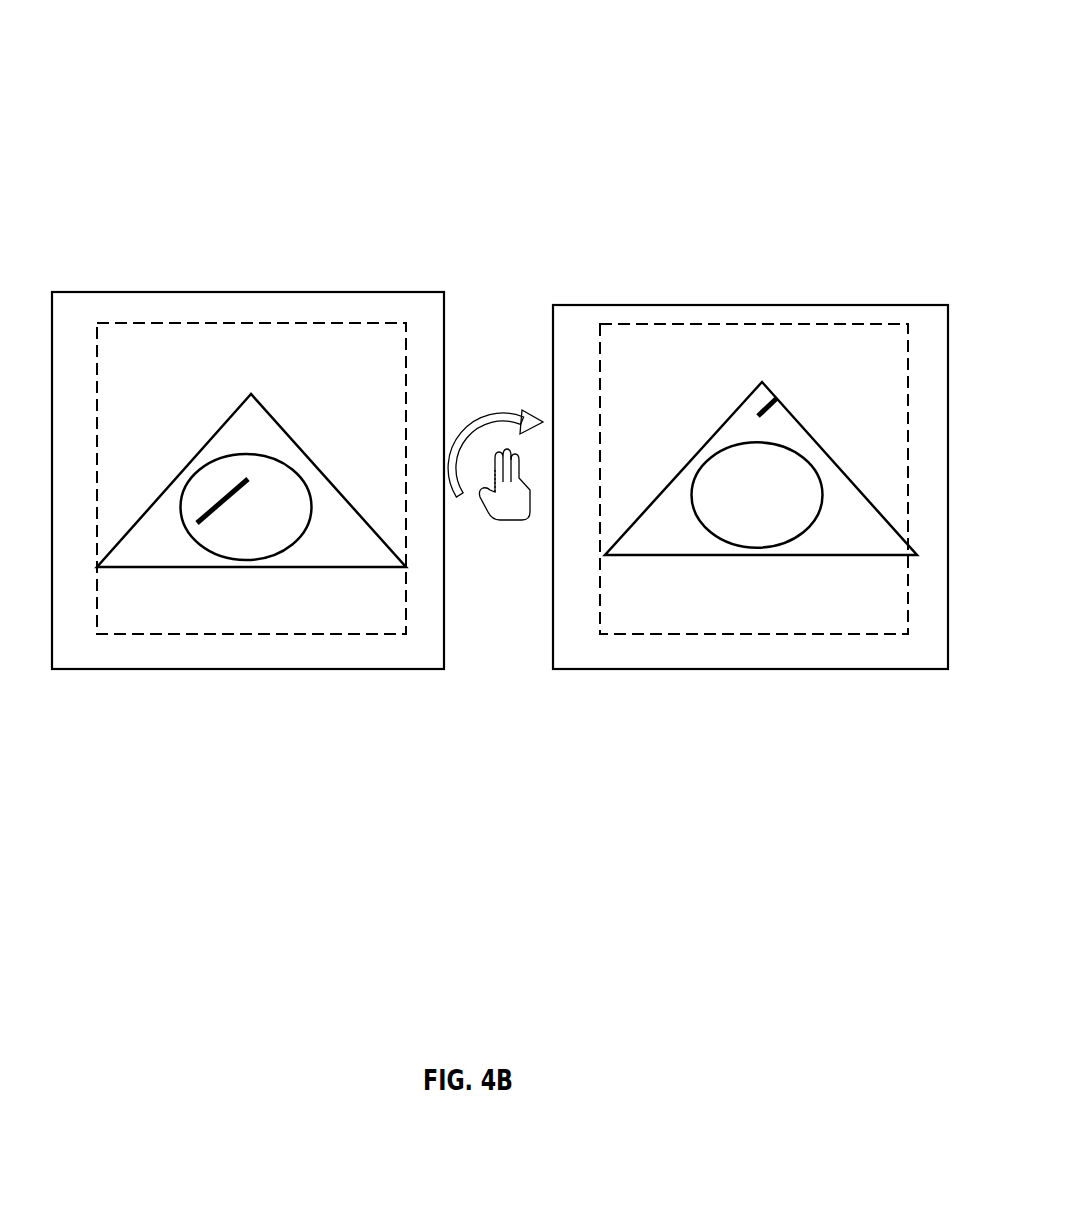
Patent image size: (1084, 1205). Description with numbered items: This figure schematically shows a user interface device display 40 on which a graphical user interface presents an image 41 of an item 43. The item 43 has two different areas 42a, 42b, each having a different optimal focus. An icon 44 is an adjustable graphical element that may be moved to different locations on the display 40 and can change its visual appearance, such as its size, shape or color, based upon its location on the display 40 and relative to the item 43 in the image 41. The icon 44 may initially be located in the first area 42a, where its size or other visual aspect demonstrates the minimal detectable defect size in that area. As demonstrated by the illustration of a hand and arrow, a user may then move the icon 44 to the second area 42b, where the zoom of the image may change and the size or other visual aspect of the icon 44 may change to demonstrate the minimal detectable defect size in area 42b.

The display 40 is at (751, 211).
The image 41 is at (278, 622).
The area 42a is at (237, 528).
The area 42b is at (251, 435).
The item 43 is at (302, 568).
The icon 44 is at (222, 487).